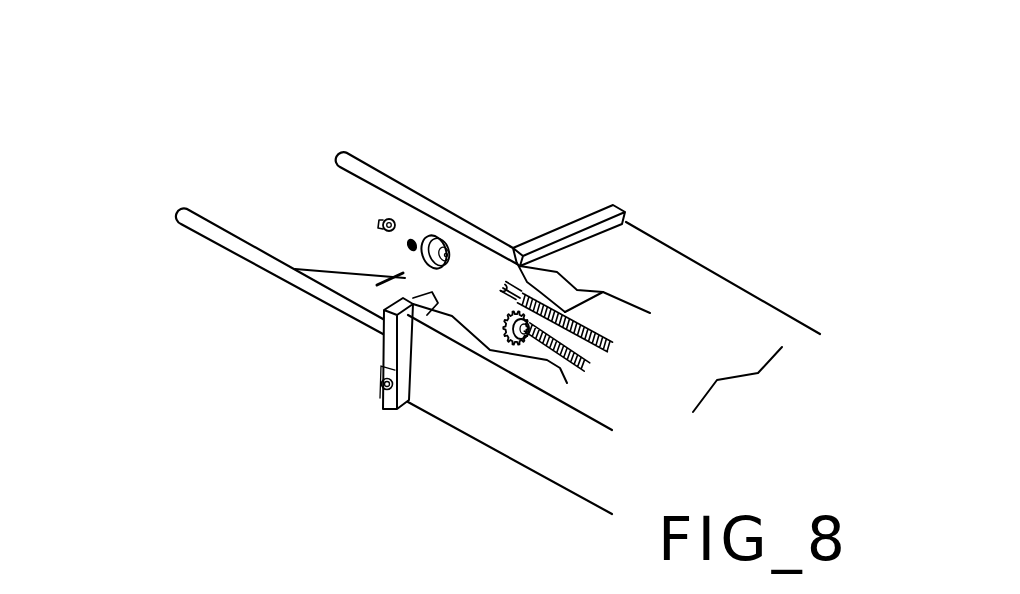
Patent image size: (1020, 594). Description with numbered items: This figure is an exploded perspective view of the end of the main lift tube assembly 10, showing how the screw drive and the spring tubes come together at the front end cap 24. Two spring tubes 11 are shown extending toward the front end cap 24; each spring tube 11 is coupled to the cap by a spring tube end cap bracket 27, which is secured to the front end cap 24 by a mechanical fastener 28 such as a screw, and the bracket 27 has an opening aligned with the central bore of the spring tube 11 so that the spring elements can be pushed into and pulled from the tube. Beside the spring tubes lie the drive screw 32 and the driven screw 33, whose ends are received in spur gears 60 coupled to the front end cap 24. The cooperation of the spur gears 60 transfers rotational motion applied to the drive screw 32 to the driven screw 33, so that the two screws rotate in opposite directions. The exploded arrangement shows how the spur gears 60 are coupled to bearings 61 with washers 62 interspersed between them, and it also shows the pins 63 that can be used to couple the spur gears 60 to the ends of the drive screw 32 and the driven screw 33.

The frame 10 is at (737, 375).
The spring tube 11 is at (363, 165).
The front end cap 24 is at (620, 211).
The spring tube end cap bracket 27 is at (392, 402).
The mechanical fastener 28 is at (380, 383).
The drive screw 32 is at (650, 313).
The driven screw 33 is at (600, 330).
The spur gear 60 is at (462, 236).
The bearing 61 is at (395, 222).
The washer 62 is at (407, 240).
The pin 63 is at (295, 269).